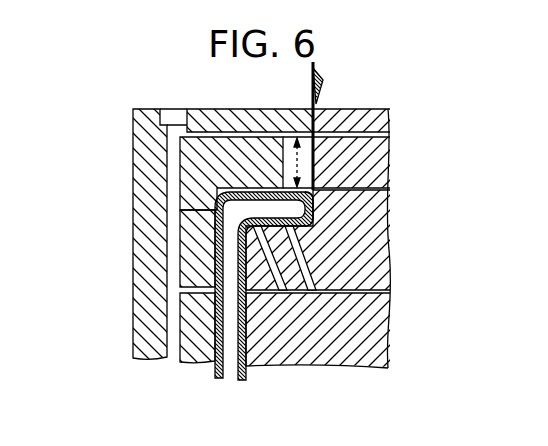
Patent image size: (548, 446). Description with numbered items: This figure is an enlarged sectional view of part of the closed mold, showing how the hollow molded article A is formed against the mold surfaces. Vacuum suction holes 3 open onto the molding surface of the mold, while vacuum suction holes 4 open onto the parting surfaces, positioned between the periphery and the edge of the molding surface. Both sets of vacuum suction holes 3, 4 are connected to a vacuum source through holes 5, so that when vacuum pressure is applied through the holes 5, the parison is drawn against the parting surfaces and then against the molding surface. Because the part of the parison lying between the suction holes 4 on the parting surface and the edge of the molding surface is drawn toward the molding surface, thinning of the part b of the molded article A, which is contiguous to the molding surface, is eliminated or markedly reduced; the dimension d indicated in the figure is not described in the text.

The vacuum suction holes 3 is at (213, 207).
The vacuum suction holes 4 is at (230, 132).
The holes 5 is at (170, 172).
The hollow molded article A is at (227, 382).
The part of the molded article b is at (299, 205).
The gap distance d is at (295, 162).